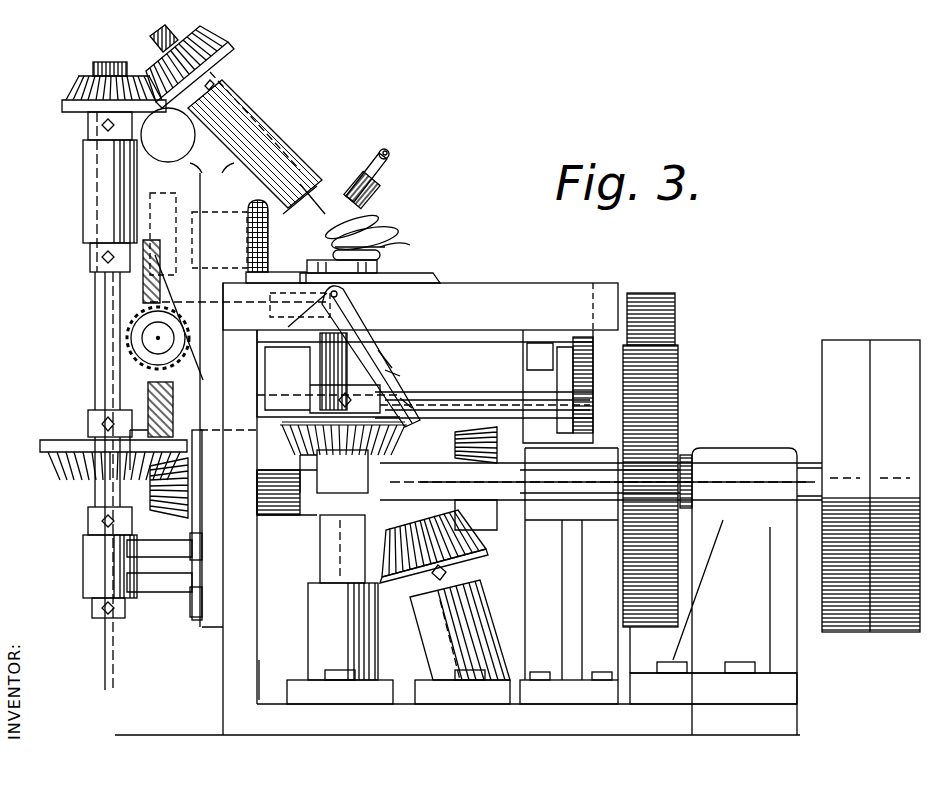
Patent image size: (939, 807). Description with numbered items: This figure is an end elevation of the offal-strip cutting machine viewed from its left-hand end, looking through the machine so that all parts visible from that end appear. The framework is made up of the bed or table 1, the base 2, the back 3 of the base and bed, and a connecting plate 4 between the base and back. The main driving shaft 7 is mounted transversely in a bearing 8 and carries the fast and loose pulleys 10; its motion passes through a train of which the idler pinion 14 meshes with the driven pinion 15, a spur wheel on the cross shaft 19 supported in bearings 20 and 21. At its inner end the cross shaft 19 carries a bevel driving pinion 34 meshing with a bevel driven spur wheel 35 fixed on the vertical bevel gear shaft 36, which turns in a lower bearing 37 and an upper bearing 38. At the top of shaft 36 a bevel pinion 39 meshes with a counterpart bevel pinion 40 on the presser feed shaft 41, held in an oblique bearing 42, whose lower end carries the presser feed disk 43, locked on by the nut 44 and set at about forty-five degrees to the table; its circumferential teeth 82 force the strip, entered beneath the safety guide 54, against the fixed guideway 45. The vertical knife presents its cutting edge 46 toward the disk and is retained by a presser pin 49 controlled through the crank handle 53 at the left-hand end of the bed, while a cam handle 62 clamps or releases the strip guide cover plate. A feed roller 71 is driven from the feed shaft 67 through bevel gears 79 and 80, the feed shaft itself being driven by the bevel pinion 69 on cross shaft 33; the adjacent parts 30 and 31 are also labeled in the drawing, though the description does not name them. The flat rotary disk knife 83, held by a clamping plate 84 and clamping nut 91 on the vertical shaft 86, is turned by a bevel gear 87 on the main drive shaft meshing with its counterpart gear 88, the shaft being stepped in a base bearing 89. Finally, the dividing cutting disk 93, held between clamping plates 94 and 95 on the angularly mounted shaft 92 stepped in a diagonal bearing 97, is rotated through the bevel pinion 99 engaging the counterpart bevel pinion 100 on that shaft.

The bed or table 1 is at (517, 296).
The base 2 is at (457, 719).
The back of the base and bed 3 is at (233, 653).
The connecting plate 4 is at (263, 667).
The main driving shaft 7 is at (688, 478).
The bearing 8 is at (748, 452).
The fast and loose pulleys 10 is at (871, 470).
The idler pinion 14 is at (660, 332).
The driven pinion 15 is at (662, 432).
The cross shaft 19 is at (601, 481).
The bearing 20 is at (569, 576).
The bearing 21 is at (312, 482).
The bearing cap 30 is at (536, 386).
The bearing block 31 is at (270, 400).
The cross shaft 33 is at (463, 407).
The bevel driving pinion 34 is at (150, 480).
The bevel driven spur wheel 35 is at (50, 440).
The bevel gear shaft 36 is at (100, 318).
The lower bearing 37 is at (95, 562).
The upper bearing 38 is at (92, 177).
The bevel pinion 39 is at (75, 97).
The counterpart bevel pinion 40 is at (205, 44).
The presser feed shaft 41 is at (166, 40).
The oblique bearing 42 is at (258, 108).
The presser feed disk 43 is at (378, 156).
The nut 44 is at (364, 209).
The guideway 45 is at (235, 283).
The cutting edge 46 is at (292, 190).
The presser pin 49 is at (288, 311).
The crank handle 53 is at (378, 362).
The entering safety guide 54 is at (264, 292).
The cam handle 62 is at (383, 252).
The feed shaft 67 is at (158, 338).
The bevel pinion 69 is at (150, 392).
The feed roller 71 is at (262, 201).
The bevel gear 79 is at (128, 336).
The bevel gear 80 is at (240, 275).
The teeth 82 is at (386, 156).
The rotary disk knife 83 is at (410, 280).
The clamping plate 84 is at (430, 275).
The vertical shaft 86 is at (388, 375).
The bevel gear 87 is at (412, 453).
The counterpart gear 88 is at (407, 403).
The base bearing 89 is at (332, 628).
The clamping nut 91 is at (388, 267).
The angularly mounted shaft 92 is at (380, 343).
The dividing cutting disk 93 is at (387, 234).
The clamping plate 94 is at (372, 228).
The clamping plate 95 is at (400, 243).
The diagonal bearing 97 is at (477, 600).
The bevel pinion 99 is at (470, 532).
The counterpart bevel pinion 100 is at (468, 562).